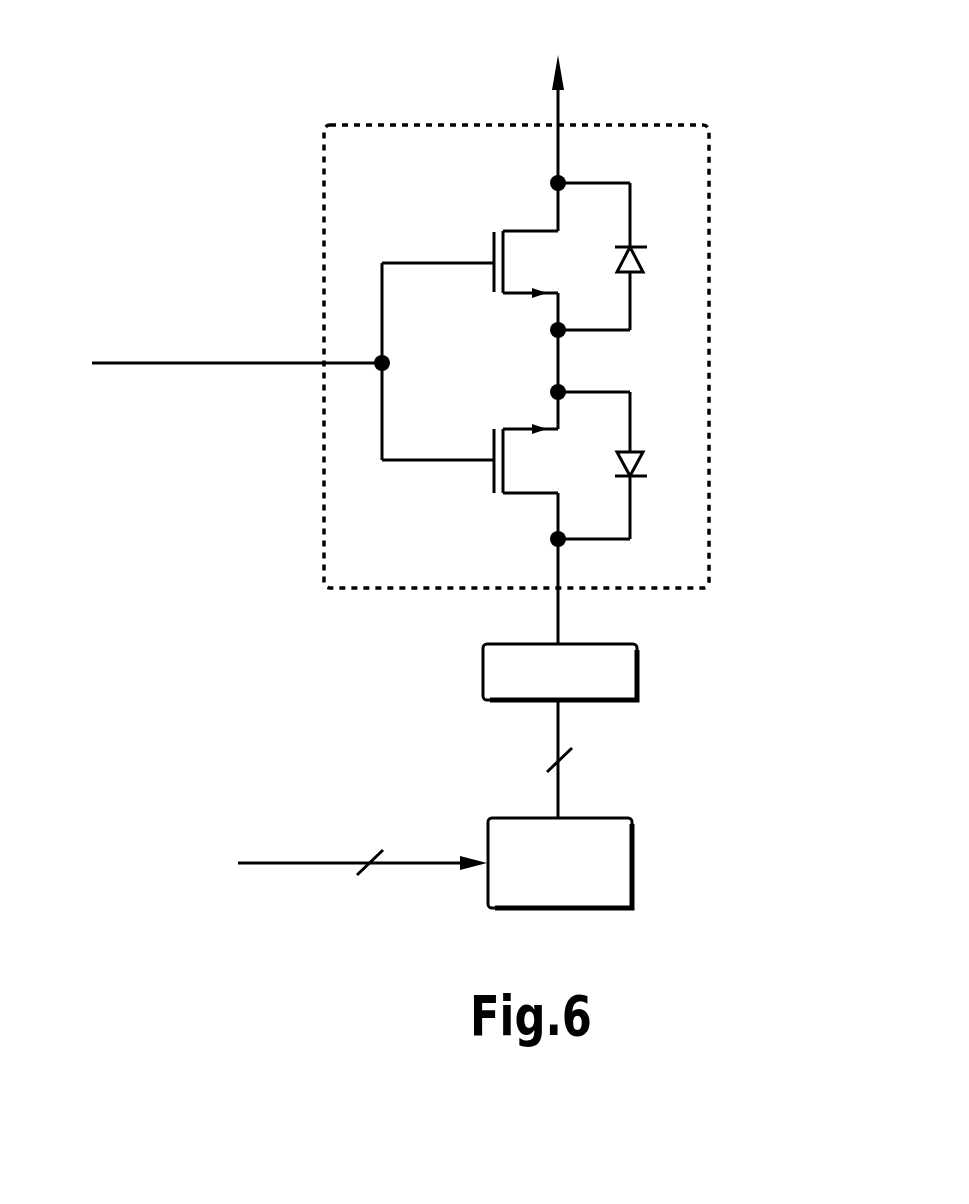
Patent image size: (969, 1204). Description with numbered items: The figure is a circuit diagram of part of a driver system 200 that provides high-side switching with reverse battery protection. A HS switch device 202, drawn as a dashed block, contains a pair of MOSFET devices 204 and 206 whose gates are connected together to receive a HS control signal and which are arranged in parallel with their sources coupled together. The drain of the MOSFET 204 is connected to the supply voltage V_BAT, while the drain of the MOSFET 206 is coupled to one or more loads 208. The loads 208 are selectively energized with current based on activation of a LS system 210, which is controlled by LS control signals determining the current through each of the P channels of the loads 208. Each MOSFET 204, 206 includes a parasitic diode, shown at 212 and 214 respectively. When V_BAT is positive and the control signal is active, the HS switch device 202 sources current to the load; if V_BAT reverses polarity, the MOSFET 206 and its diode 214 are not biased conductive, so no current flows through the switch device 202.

The driver system 200 is at (726, 59).
The HS switch device 202 is at (709, 167).
The MOSFET device 204 is at (477, 195).
The MOSFET device 206 is at (473, 516).
The loads 208 is at (483, 669).
The LS system 210 is at (632, 862).
The parasitic diode 212 is at (643, 270).
The parasitic diode 214 is at (642, 454).